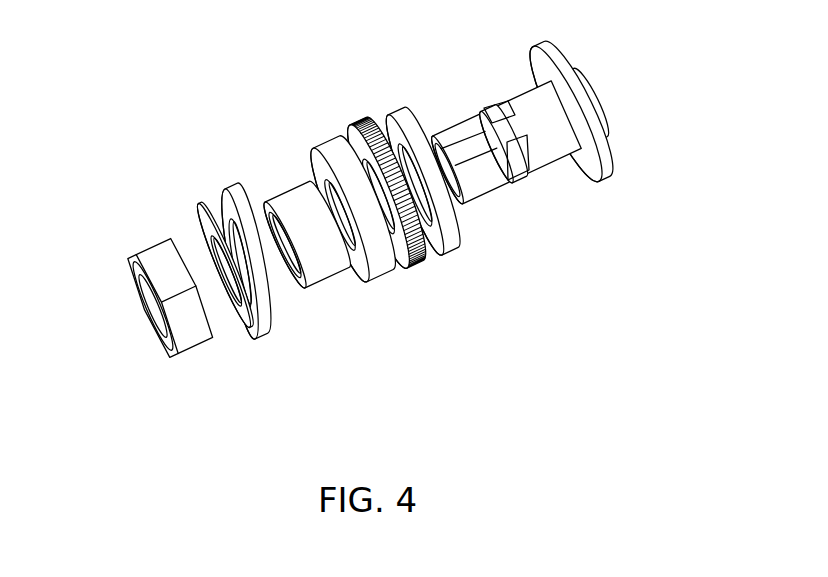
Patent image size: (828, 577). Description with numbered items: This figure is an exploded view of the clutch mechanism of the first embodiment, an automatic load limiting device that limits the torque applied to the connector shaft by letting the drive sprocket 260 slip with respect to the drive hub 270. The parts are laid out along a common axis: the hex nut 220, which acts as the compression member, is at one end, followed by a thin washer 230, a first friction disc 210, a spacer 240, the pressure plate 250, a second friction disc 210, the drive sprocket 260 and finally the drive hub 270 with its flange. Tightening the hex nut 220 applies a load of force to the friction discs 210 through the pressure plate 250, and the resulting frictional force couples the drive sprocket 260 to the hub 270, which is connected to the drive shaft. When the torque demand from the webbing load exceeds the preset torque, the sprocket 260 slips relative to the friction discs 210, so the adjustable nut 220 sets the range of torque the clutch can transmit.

The friction discs 210 is at (397, 114).
The hex nut 220 is at (150, 260).
The thin washer 230 is at (250, 330).
The spacer sleeve 240 is at (332, 266).
The pressure plate 250 is at (392, 278).
The drive sprocket 260 is at (427, 264).
The drive hub 270 is at (548, 148).